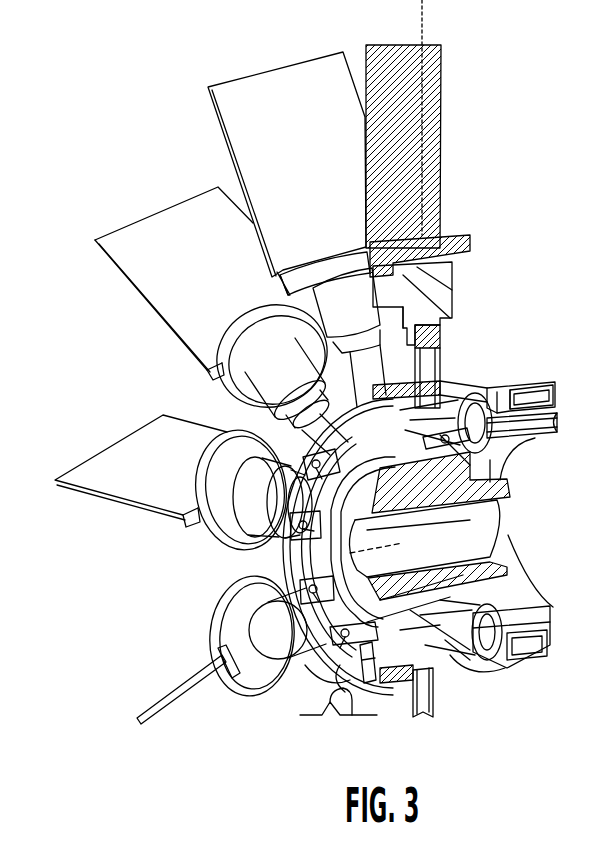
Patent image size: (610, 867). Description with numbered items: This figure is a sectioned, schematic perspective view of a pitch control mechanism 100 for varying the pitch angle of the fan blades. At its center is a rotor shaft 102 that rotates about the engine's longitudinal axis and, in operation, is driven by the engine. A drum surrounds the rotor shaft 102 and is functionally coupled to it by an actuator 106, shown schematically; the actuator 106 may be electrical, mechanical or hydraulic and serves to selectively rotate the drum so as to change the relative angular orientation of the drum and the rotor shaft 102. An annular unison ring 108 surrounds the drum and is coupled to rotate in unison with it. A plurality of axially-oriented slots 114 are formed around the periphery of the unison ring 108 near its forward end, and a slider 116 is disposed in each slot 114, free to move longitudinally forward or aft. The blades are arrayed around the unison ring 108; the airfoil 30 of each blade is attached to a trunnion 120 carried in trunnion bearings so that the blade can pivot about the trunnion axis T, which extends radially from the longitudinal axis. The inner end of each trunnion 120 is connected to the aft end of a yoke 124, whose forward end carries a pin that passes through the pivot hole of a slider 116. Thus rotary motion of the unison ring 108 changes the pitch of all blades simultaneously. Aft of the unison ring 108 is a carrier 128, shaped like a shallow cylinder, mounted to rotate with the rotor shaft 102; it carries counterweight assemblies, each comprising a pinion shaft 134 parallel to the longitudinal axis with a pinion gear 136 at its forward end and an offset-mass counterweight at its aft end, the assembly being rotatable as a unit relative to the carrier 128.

The pitch control mechanism 100 is at (516, 110).
The airfoil 30 is at (304, 146).
The trunnion axis T is at (438, 147).
The trunnion 120 is at (447, 288).
The carrier 128 is at (530, 385).
The rotor shaft 102 is at (509, 489).
The actuator 106 is at (482, 560).
The pinion shaft 134 is at (533, 625).
The pinion gear 136 is at (480, 657).
The slider 116 is at (320, 655).
The unison ring 108 is at (350, 673).
The slot 114 is at (365, 650).
The yoke 124 is at (397, 690).